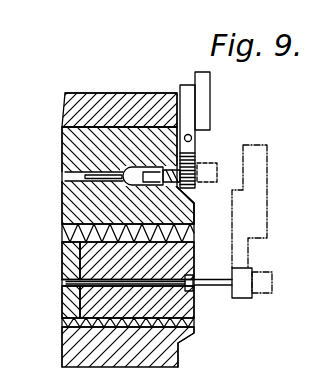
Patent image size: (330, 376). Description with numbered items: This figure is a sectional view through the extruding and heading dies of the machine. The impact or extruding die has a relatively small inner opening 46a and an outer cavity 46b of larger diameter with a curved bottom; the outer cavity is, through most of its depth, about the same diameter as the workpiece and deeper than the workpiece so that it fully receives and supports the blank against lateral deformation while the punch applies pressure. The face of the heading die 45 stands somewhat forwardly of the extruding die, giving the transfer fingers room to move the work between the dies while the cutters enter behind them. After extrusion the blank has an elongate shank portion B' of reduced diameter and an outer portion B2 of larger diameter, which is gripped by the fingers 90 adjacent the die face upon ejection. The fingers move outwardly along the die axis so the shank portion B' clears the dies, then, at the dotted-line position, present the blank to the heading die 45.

The elongate shank portion B' is at (147, 183).
The inner opening 46a is at (123, 167).
The fingers 90 is at (197, 155).
The outer portion B2 is at (178, 194).
The outer cavity 46b is at (170, 212).
The heading die 45 is at (194, 303).